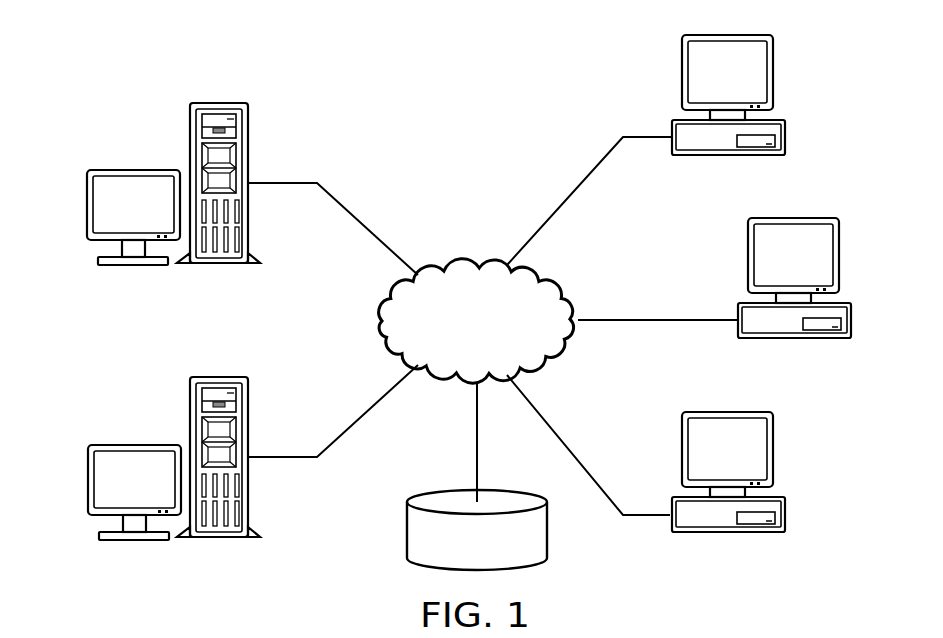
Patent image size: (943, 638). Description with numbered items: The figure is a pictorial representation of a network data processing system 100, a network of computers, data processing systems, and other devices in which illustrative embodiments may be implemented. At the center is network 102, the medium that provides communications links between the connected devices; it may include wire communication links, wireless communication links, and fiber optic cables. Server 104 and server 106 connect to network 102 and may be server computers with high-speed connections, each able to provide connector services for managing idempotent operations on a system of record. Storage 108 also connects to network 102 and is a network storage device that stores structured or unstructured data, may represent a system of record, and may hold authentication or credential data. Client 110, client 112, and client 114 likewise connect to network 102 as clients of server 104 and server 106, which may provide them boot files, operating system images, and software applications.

The network data processing system 100 is at (322, 73).
The network 102 is at (470, 260).
The server 104 is at (87, 203).
The server 106 is at (88, 478).
The storage 108 is at (407, 530).
The client 110 is at (793, 127).
The client 112 is at (860, 308).
The client 114 is at (787, 525).